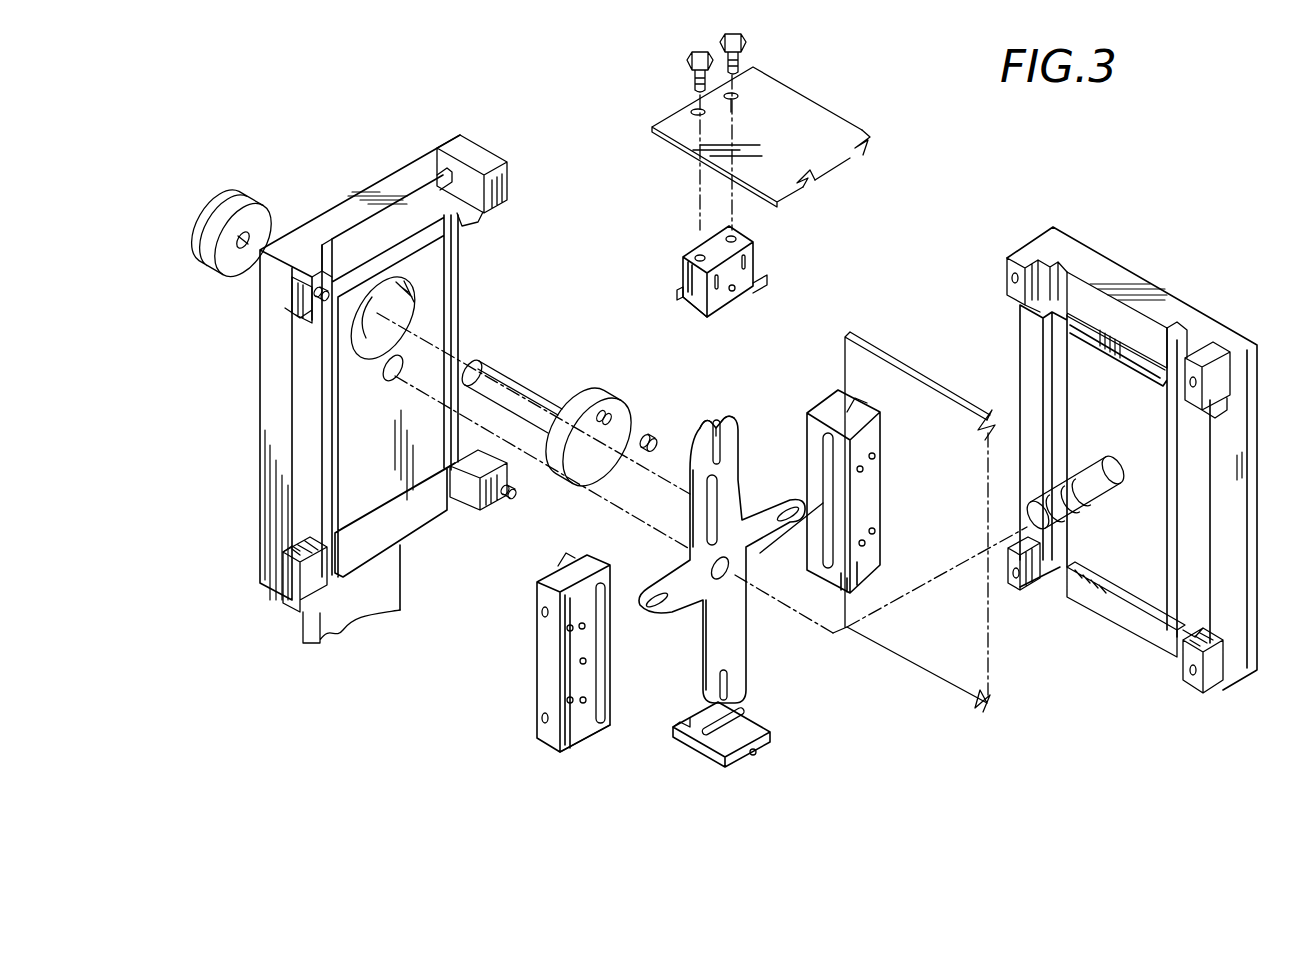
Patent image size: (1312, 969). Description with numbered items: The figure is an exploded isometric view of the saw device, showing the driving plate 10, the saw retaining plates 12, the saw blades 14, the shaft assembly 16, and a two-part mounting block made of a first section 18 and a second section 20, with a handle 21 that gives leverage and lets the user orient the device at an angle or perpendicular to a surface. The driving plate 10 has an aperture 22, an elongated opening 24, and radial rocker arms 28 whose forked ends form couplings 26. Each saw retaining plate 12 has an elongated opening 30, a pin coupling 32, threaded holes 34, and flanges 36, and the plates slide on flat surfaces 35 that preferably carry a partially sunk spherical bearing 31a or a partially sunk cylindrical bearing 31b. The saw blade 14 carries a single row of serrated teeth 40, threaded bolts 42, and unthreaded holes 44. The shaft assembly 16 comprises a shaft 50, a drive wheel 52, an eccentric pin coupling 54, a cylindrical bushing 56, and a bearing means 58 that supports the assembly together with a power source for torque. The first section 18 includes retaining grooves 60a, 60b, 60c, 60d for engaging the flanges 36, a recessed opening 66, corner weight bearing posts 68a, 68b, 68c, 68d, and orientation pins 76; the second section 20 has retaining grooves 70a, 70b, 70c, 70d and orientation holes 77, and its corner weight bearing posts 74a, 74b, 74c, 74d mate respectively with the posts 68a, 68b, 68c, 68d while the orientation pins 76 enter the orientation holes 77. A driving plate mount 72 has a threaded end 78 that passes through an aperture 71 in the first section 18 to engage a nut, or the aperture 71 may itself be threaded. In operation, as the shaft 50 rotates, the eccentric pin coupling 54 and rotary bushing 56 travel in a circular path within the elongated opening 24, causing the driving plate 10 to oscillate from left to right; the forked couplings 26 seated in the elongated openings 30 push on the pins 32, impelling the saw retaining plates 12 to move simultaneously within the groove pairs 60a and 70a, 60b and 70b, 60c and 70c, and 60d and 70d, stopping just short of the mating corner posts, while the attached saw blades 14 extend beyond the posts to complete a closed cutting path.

The driving plate 10 is at (760, 553).
The saw retaining plate 12 is at (540, 678).
The saw blade 14 is at (777, 80).
The shaft assembly 16 is at (515, 387).
The first section 18 is at (263, 475).
The second section 20 is at (1030, 323).
The handle 21 is at (347, 627).
The aperture 22 is at (728, 582).
The elongated opening 24 is at (728, 437).
The forked coupling 26 is at (703, 427).
The radial rocker arm 28 is at (737, 480).
The elongated opening 30 is at (830, 462).
The partially sunk spherical bearing 31a is at (567, 632).
The partially sunk cylindrical bearing 31b is at (746, 262).
The pin coupling 32 is at (736, 293).
The threaded hole 34 is at (700, 254).
The flat surface 35 is at (690, 312).
The flange 36 is at (680, 292).
The serrated teeth 40 is at (877, 135).
The threaded bolt 42 is at (690, 55).
The unthreaded hole 44 is at (703, 112).
The shaft 50 is at (503, 385).
The drive wheel 52 is at (607, 453).
The pin coupling 54 is at (603, 413).
The bushing 56 is at (650, 437).
The bearing means 58 is at (242, 197).
The retaining groove 60a is at (440, 170).
The retaining groove 60b is at (326, 240).
The retaining groove 60c is at (470, 223).
The retaining groove 60d is at (290, 553).
The recessed opening 66 is at (413, 297).
The corner weight bearing post 68a is at (500, 177).
The corner weight bearing post 68b is at (287, 320).
The corner weight bearing post 68c is at (310, 590).
The corner weight bearing post 68d is at (495, 493).
The retaining groove 70a is at (1067, 268).
The retaining groove 70b is at (1183, 333).
The retaining groove 70c is at (1150, 365).
The retaining groove 70d is at (1143, 577).
The aperture 71 is at (393, 387).
The driving plate mount 72 is at (1103, 457).
The corner weight bearing post 74a is at (1012, 258).
The corner weight bearing post 74b is at (1197, 360).
The corner weight bearing post 74c is at (1187, 657).
The corner weight bearing post 74d is at (1010, 552).
The orientation pin 76 is at (313, 290).
The orientation hole 77 is at (1010, 277).
The threaded end 78 is at (1060, 517).